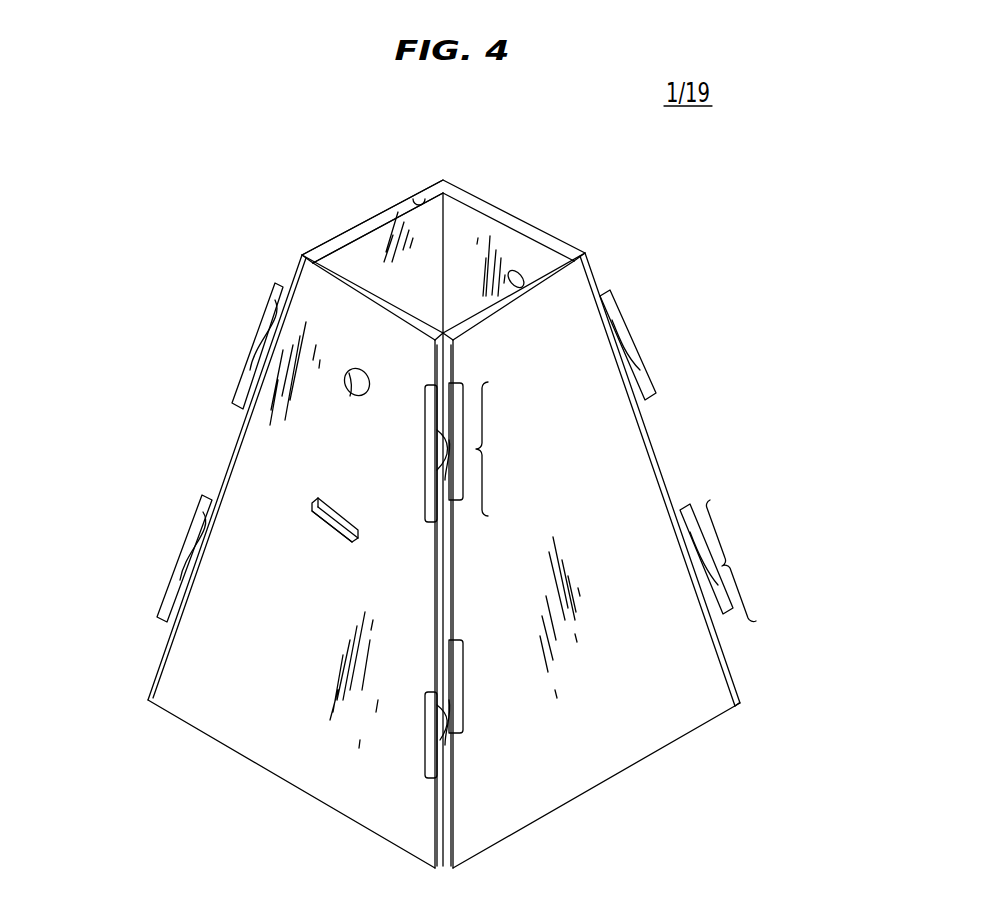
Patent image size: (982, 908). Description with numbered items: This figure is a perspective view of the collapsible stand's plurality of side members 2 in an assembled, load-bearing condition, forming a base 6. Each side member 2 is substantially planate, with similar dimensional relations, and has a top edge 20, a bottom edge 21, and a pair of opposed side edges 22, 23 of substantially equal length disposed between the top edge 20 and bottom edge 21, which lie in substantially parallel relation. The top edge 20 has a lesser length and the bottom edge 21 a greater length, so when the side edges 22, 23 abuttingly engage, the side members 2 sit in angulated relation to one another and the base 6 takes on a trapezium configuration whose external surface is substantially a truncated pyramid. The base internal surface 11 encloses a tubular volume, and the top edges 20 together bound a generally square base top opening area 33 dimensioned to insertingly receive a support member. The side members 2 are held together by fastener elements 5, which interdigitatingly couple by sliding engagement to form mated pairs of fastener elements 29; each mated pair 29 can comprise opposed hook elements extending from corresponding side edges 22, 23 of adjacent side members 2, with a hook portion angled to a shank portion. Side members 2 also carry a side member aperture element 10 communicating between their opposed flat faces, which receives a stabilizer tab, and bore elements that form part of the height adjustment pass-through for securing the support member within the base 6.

The side member 2 is at (225, 438).
The fastener element 5 is at (440, 697).
The base 6 is at (670, 432).
The side member aperture element 10 is at (330, 512).
The base internal surface 11 is at (350, 252).
The top edge 20 is at (300, 260).
The bottom edge 21 is at (298, 793).
The side edge 22 is at (423, 190).
The side edge 23 is at (155, 668).
The mated pair of fastener elements 29 is at (626, 502).
The base top opening area 33 is at (476, 251).